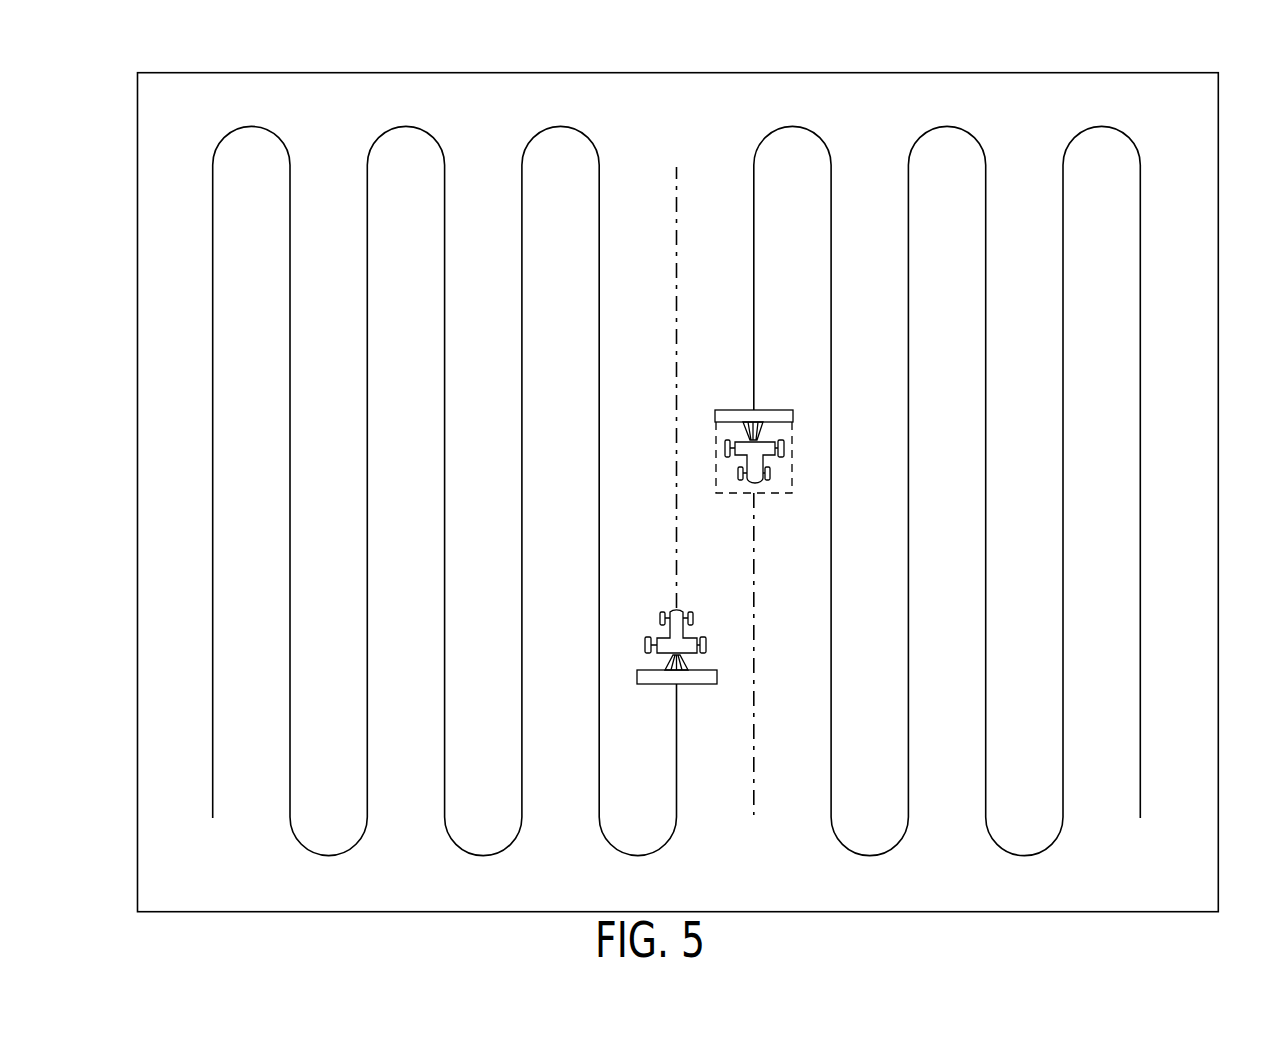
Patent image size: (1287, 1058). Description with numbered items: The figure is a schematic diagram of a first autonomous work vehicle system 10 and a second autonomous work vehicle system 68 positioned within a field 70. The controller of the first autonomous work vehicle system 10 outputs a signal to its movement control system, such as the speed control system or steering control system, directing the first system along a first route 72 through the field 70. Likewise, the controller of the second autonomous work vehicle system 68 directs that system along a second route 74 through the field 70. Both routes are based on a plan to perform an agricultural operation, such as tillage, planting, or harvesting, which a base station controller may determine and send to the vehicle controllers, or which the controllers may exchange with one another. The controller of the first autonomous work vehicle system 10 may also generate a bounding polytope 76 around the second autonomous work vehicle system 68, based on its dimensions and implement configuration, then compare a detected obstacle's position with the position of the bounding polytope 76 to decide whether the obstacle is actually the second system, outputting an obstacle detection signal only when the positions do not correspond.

The field 70 is at (1155, 88).
The first route 72 is at (520, 273).
The second route 74 is at (1122, 378).
The second autonomous work vehicle system 68 is at (780, 393).
The bounding polytope 76 is at (772, 493).
The autonomous work vehicle system 10 is at (643, 613).